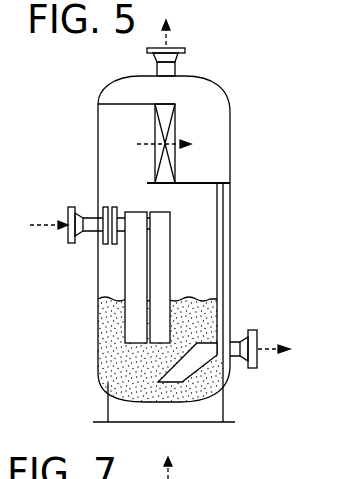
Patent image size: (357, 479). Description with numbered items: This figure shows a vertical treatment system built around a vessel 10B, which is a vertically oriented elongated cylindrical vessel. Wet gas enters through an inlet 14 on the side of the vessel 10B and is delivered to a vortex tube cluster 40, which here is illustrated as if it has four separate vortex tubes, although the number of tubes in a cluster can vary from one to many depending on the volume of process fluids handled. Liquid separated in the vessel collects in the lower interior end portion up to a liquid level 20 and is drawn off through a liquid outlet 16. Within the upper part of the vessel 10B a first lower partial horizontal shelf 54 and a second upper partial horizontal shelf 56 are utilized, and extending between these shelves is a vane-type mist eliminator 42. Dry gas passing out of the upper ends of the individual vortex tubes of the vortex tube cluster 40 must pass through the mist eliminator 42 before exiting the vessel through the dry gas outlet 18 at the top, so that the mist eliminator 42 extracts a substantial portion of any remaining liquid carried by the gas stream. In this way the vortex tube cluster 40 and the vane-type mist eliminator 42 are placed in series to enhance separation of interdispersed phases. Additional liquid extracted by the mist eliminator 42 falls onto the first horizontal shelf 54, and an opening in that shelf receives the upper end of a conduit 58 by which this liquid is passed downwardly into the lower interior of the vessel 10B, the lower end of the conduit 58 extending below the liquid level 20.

In FIG. 5, the vessel 10B is at (230, 110).
In FIG. 5, the inlet 14 is at (68, 222).
In FIG. 5, the liquid outlet 16 is at (247, 360).
In FIG. 5, the dry gas outlet 18 is at (172, 44).
In FIG. 7, the dry gas outlet 18 is at (178, 478).
In FIG. 5, the liquid level 20 is at (118, 298).
In FIG. 5, the vortex tube cluster 40 is at (195, 240).
In FIG. 5, the vane-type mist eliminator 42 is at (173, 168).
In FIG. 5, the first lower partial horizontal shelf 54 is at (193, 185).
In FIG. 5, the second upper partial horizontal shelf 56 is at (125, 98).
In FIG. 5, the conduit 58 is at (221, 278).